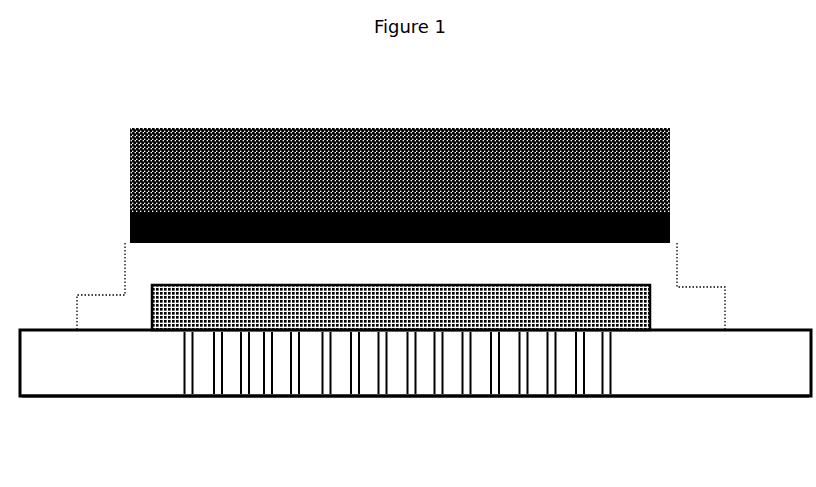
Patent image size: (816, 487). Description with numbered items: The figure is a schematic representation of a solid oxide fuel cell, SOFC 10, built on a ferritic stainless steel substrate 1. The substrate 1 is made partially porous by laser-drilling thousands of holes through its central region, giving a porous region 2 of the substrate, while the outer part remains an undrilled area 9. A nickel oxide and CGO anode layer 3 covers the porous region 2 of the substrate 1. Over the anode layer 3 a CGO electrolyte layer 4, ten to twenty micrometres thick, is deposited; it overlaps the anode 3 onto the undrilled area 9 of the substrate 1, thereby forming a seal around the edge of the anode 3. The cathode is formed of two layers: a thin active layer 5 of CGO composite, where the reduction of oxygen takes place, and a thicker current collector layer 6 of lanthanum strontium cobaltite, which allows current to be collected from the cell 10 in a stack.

The ferritic stainless steel substrate 1 is at (660, 403).
The porous region of the substrate 2 is at (217, 390).
The anode layer 3 is at (622, 300).
The electrolyte layer 4 is at (138, 264).
The active layer 5 is at (140, 219).
The current collector layer 6 is at (140, 150).
The undrilled area of the substrate 9 is at (140, 397).
The SOFC 10 is at (690, 133).